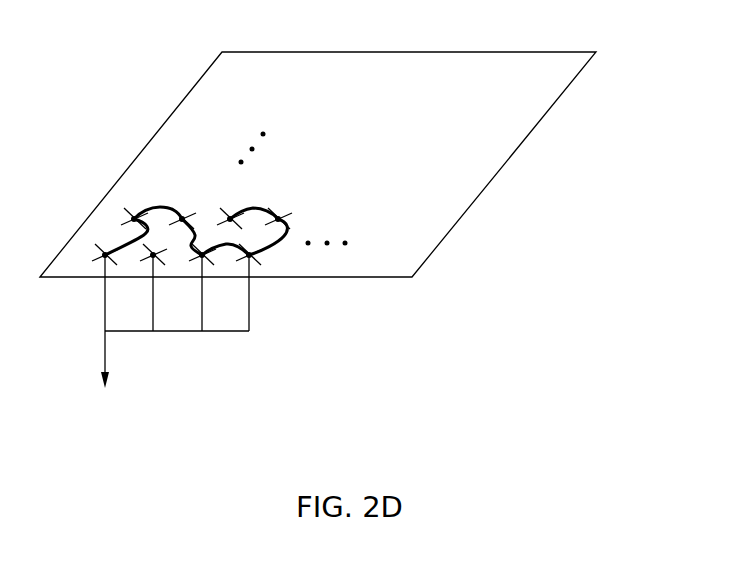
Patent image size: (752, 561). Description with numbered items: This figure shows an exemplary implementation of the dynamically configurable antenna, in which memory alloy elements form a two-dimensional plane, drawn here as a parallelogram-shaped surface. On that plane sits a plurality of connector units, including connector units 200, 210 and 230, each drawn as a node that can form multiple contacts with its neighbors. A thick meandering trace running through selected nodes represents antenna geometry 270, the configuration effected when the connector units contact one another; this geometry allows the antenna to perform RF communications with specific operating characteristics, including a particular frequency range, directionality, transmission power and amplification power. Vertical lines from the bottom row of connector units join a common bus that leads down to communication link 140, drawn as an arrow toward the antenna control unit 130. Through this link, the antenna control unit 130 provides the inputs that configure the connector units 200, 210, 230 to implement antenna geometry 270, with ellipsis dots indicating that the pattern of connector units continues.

The connector unit 200 is at (231, 203).
The connector unit 210 is at (286, 203).
The connector unit 230 is at (194, 270).
The antenna geometry 270 is at (118, 249).
The communication link 140 is at (105, 350).
The antenna control unit 130 is at (92, 497).